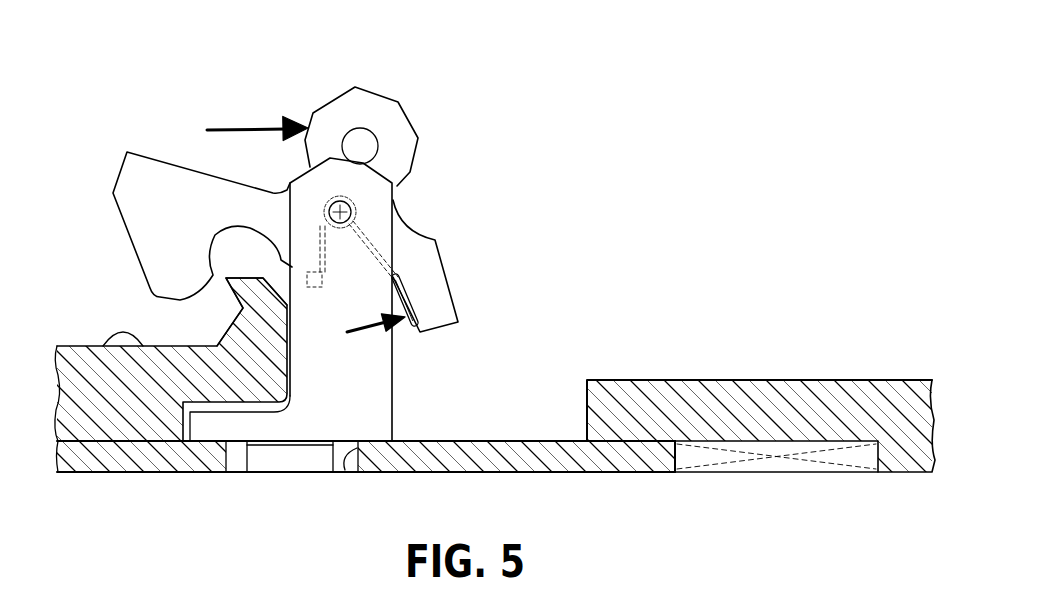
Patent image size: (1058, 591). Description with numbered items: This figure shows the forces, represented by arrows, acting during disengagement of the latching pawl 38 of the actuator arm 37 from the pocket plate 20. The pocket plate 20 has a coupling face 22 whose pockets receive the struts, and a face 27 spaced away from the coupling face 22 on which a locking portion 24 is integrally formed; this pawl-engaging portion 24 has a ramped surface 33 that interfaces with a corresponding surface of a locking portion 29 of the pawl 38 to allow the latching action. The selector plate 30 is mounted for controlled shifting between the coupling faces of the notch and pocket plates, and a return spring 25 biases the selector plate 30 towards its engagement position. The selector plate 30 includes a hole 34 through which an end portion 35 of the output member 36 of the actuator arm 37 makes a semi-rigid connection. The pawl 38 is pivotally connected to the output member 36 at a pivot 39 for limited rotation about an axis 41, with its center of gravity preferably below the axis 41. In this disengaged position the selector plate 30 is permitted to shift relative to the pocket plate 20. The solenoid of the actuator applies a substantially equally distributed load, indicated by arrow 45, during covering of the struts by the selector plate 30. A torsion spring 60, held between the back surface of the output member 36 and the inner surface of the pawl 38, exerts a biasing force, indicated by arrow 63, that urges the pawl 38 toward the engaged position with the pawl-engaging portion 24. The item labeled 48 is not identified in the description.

The pocket plate 20 is at (818, 370).
The coupling face 22 is at (637, 450).
The locking portion 24 is at (243, 308).
The return spring 25 is at (777, 470).
The face 27 is at (107, 345).
The locking portion 29 is at (178, 272).
The selector plate 30 is at (641, 482).
The ramped surface 33 is at (293, 293).
The hole 34 is at (345, 470).
The end portion 35 is at (296, 472).
The output member 36 is at (395, 382).
The actuator arm 37 is at (445, 113).
The latching pawl 38 is at (332, 84).
The pivot 39 is at (336, 225).
The axis 41 is at (351, 205).
The arrow 45 is at (257, 129).
The head edge 48 is at (380, 90).
The torsion spring 60 is at (415, 288).
The arrow 63 is at (367, 332).